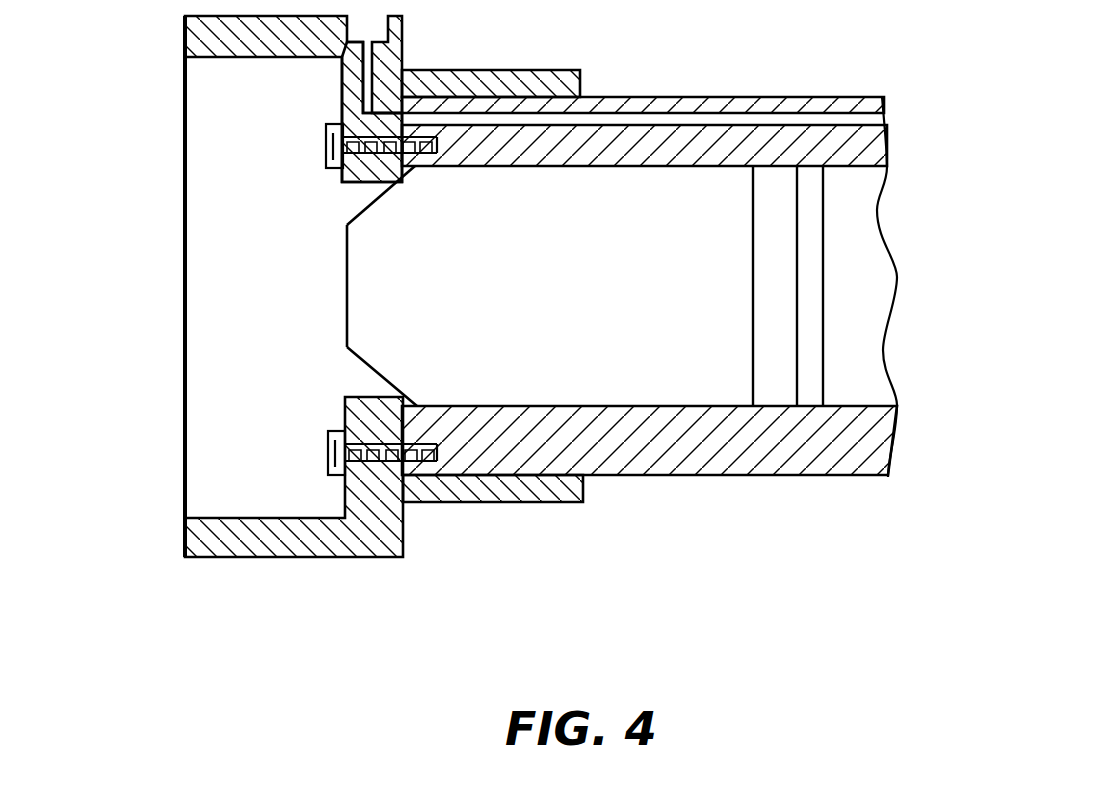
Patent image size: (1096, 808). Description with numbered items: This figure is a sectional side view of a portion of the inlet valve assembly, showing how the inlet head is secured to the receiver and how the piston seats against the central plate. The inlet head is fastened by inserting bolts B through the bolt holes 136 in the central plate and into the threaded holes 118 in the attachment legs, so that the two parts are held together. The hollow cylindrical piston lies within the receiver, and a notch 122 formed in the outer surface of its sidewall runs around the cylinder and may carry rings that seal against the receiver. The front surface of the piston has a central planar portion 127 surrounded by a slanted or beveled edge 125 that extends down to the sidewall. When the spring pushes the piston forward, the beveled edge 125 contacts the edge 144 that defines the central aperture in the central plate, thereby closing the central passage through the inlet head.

The bolt B is at (327, 136).
The edge 144 is at (357, 178).
The beveled edge 125 is at (370, 204).
The central planar portion 127 is at (345, 272).
The threaded holes 118 is at (420, 465).
The notch 122 is at (773, 375).
The bolt holes 136 is at (372, 463).